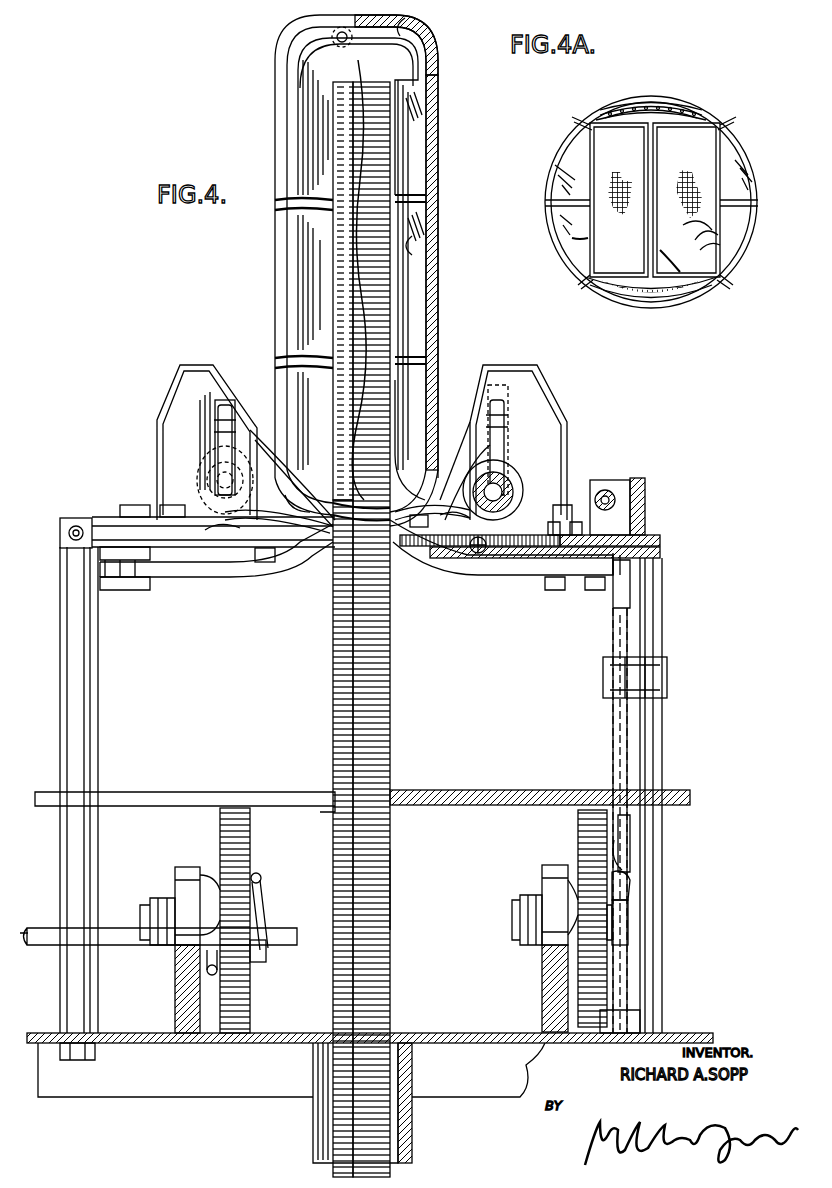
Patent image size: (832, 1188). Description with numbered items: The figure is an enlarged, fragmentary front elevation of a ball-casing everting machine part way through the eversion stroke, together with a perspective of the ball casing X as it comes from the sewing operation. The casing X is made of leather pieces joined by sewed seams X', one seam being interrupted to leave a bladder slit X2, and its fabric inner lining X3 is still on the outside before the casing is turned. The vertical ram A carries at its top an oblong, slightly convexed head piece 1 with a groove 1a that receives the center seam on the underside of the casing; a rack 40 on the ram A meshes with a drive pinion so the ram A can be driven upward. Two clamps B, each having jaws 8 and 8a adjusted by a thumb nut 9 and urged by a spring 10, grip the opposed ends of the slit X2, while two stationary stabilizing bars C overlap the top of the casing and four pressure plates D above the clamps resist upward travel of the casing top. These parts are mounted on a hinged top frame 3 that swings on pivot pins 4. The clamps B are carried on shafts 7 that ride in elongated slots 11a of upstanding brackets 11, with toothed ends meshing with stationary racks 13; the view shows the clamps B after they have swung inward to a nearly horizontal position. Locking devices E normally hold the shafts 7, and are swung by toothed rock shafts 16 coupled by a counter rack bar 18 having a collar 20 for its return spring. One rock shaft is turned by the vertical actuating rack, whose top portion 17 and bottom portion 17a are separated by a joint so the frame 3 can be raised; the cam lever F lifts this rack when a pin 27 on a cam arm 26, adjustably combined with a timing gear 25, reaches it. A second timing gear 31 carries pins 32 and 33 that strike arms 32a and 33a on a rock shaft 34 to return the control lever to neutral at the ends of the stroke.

In FIG. 4, the ram A is at (324, 701).
In FIG. 4, the rack 40 is at (388, 888).
In FIG. 4, the ball casing X is at (333, 270).
In FIG. 4A, the ball casing X is at (662, 202).
In FIG. 4, the sewed seams X' is at (359, 258).
In FIG. 4A, the sewed seams X' is at (626, 270).
In FIG. 4, the slit or opening X2 is at (405, 528).
In FIG. 4A, the slit or opening X2 is at (648, 97).
In FIG. 4, the inner lining X3 is at (414, 28).
In FIG. 4A, the inner lining X3 is at (572, 165).
In FIG. 4, the head piece 1 is at (400, 62).
In FIG. 4, the groove 1a is at (398, 44).
In FIG. 4, the locking devices E is at (207, 487).
In FIG. 4, the pressure plates D is at (292, 510).
In FIG. 4, the clamps B is at (268, 492).
In FIG. 4, the stabilizing bars C is at (310, 538).
In FIG. 4, the top frame 3 is at (563, 530).
In FIG. 4, the pivot pins 4 is at (80, 520).
In FIG. 4, the shafts 7 is at (207, 500).
In FIG. 4, the jaws 8 is at (215, 468).
In FIG. 4, the outer jaws 8a is at (232, 540).
In FIG. 4, the thumb nut 9 is at (236, 558).
In FIG. 4, the spring 10 is at (480, 553).
In FIG. 4, the brackets 11 is at (212, 457).
In FIG. 4, the elongated slots 11a is at (195, 447).
In FIG. 4, the racks 13 is at (563, 503).
In FIG. 4, the rock shafts 16 is at (265, 562).
In FIG. 4, the actuating rack 17 is at (632, 590).
In FIG. 4, the actuating rack bottom portion 17a is at (625, 722).
In FIG. 4, the counter rack bar 18 is at (606, 490).
In FIG. 4, the collar 20 is at (645, 494).
In FIG. 4, the timing gear 25 is at (592, 950).
In FIG. 4, the cam arm 26 is at (612, 903).
In FIG. 4, the pin 27 is at (630, 882).
In FIG. 4, the timing gear 31 is at (230, 846).
In FIG. 4, the pin 32 is at (200, 1000).
In FIG. 4, the arm 32a is at (207, 970).
In FIG. 4, the pin 33 is at (262, 962).
In FIG. 4, the arm 33a is at (262, 878).
In FIG. 4, the rock shaft 34 is at (121, 932).
In FIG. 4, the cam lever F is at (632, 824).